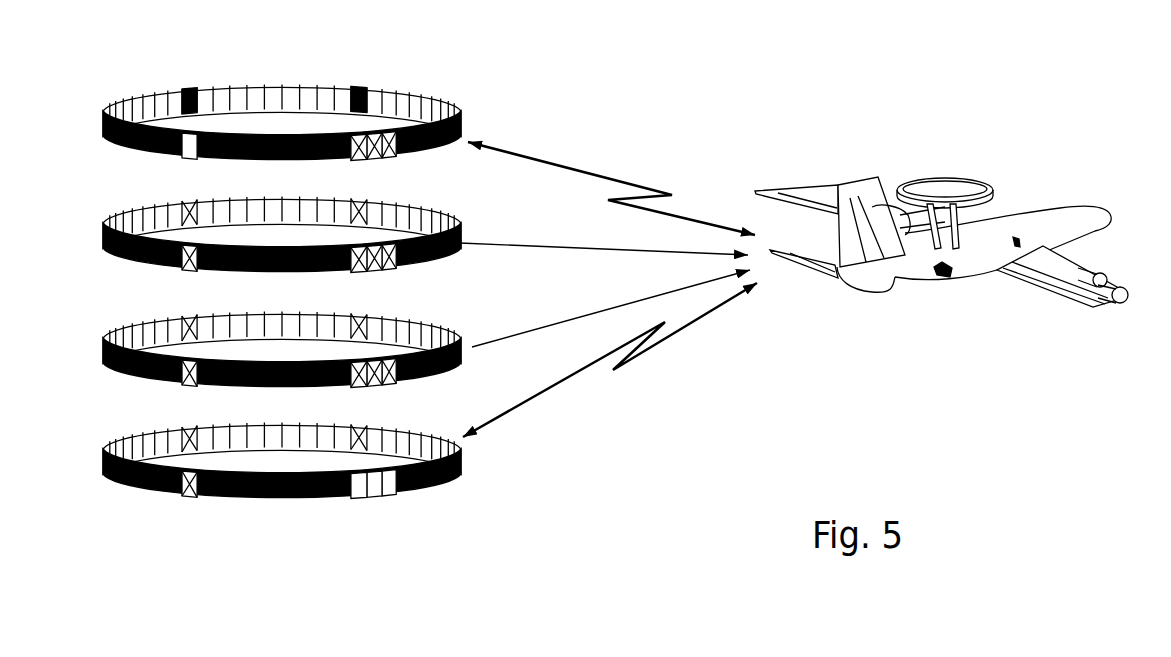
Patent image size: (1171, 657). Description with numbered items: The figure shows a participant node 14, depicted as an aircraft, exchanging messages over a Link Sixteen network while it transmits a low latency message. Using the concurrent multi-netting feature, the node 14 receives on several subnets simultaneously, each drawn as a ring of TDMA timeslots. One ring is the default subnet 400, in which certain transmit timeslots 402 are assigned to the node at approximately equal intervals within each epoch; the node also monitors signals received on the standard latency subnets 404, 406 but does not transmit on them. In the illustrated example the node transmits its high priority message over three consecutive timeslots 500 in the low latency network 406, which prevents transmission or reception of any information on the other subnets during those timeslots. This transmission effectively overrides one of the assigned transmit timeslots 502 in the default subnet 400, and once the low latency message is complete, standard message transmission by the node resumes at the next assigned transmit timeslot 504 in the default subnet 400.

The participant node 14 is at (922, 156).
The default subnet 400 is at (306, 119).
The transmit timeslots 402 is at (359, 87).
The standard latency subnet 404 is at (438, 323).
The low latency subnet 406 is at (309, 499).
The consecutive timeslots 500 is at (372, 500).
The assigned transmit timeslot 502 is at (363, 162).
The next assigned transmit timeslot 504 is at (187, 162).